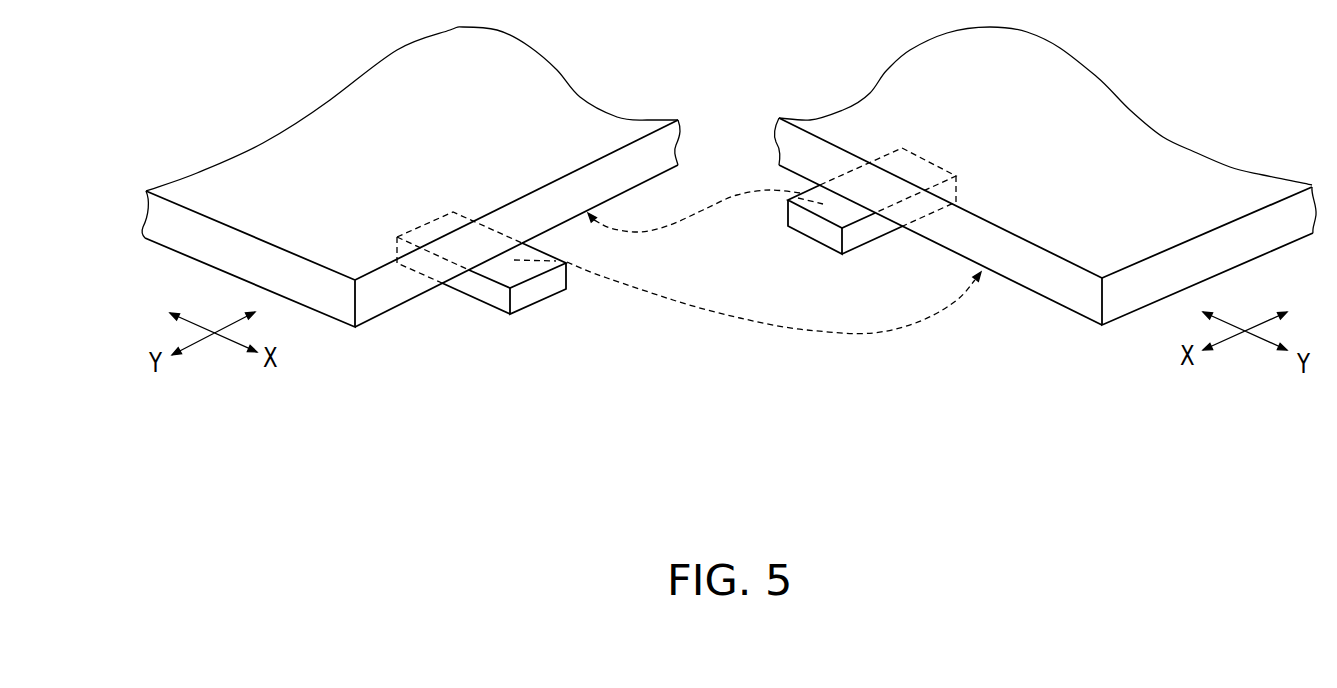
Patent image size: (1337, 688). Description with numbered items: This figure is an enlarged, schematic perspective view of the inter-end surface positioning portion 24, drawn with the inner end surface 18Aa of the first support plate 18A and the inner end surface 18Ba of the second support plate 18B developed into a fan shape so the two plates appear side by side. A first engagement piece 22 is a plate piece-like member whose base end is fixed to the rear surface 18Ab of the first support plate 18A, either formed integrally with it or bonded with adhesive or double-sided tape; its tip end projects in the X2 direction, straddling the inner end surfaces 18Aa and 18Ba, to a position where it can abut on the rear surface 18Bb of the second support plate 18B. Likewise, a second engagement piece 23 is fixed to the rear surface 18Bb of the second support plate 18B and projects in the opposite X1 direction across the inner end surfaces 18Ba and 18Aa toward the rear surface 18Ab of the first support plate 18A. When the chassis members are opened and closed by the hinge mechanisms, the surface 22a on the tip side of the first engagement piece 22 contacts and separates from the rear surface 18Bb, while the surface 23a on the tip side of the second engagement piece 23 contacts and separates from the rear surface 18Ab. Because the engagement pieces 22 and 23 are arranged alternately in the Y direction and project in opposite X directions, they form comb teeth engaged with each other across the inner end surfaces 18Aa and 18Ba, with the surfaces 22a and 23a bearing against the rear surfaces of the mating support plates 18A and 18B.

The first support plate 18A is at (277, 120).
The inner end surface of the first support plate 18Aa is at (387, 293).
The rear surface of the first support plate 18Ab is at (653, 180).
The second support plate 18B is at (1178, 116).
The inner end surface of the second support plate 18Ba is at (1060, 293).
The rear surface of the second support plate 18Bb is at (1017, 285).
The first engagement piece 22 is at (548, 288).
The surface on the tip side of the first engagement piece 22a is at (512, 268).
The second engagement piece 23 is at (812, 227).
The surface on the tip side of the second engagement piece 23a is at (851, 214).
The inter-end surface positioning portion 24 is at (593, 392).